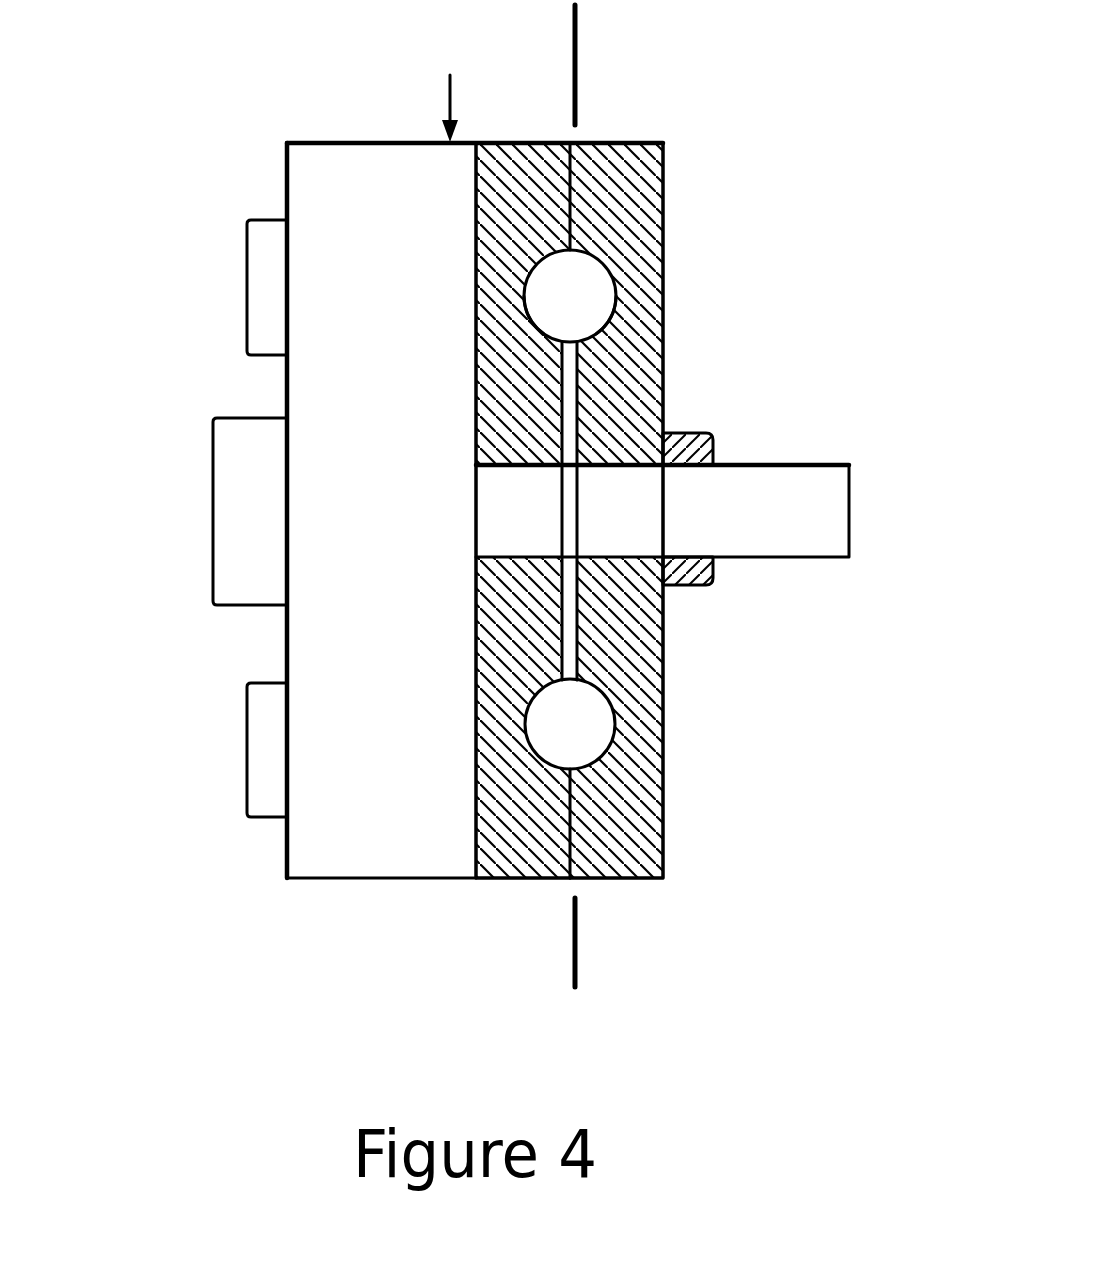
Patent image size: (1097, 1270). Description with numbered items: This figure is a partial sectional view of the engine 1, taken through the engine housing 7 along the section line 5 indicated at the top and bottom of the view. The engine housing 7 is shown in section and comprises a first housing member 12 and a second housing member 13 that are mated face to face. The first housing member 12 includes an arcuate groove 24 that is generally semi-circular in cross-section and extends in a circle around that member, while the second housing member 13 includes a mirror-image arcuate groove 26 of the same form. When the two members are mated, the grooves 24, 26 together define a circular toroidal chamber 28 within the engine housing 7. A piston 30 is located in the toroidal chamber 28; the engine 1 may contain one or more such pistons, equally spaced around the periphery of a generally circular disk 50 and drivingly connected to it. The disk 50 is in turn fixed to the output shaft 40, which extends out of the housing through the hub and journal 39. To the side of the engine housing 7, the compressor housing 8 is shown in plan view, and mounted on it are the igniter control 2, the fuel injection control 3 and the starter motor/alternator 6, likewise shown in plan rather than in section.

The engine 1 is at (452, 88).
The igniter control 2 is at (262, 733).
The fuel injection control 3 is at (262, 268).
The section line 5- 5 is at (620, 35).
The starter motor/alternator 6 is at (243, 507).
The engine housing 7 is at (684, 136).
The compressor housing 8 is at (358, 170).
The first housing member 12 is at (632, 206).
The second housing member 13 is at (520, 200).
The arcuate groove 24 is at (620, 307).
The arcuate groove 26 is at (520, 313).
The toroidal chamber 28 is at (592, 293).
The piston 30 is at (583, 725).
The hub and journal 39 is at (715, 573).
The output shaft 40 is at (810, 497).
The disk 50 is at (572, 630).